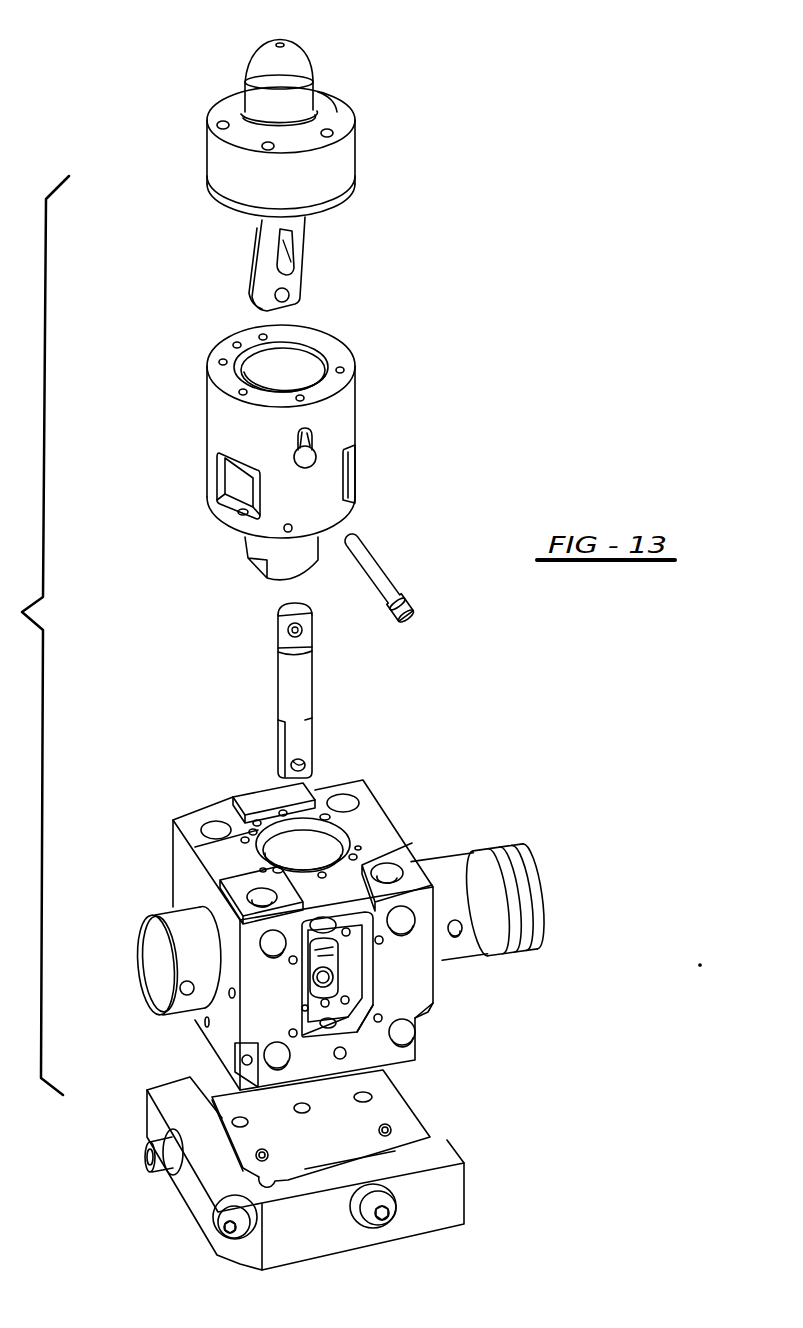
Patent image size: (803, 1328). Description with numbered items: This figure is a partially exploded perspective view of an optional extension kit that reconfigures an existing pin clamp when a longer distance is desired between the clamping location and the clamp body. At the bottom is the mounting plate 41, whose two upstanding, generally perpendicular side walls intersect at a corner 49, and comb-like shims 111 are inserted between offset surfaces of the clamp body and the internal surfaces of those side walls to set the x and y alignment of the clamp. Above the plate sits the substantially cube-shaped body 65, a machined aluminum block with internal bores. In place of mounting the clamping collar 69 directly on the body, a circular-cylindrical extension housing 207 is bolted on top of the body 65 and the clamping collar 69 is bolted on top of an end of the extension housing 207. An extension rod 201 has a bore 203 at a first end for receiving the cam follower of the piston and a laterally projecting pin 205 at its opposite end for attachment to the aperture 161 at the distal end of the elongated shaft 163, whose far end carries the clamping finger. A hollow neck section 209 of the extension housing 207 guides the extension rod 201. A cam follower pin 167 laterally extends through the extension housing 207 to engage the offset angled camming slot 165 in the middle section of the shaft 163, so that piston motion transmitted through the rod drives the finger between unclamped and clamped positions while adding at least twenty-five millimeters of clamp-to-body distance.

The clamping collar 69 is at (343, 155).
The shaft 163 is at (298, 237).
The camming slot 165 is at (280, 240).
The aperture 161 is at (288, 293).
The extension housing 207 is at (337, 420).
The hollow neck section 209 is at (255, 548).
The cam follower pin 167 is at (387, 582).
The extension rod 201 is at (298, 683).
The pin 205 is at (278, 638).
The bore 203 is at (300, 750).
The body 65 is at (387, 827).
The mounting plate 41 is at (388, 1105).
The shims 111 is at (397, 1142).
The corner 49 is at (230, 1248).